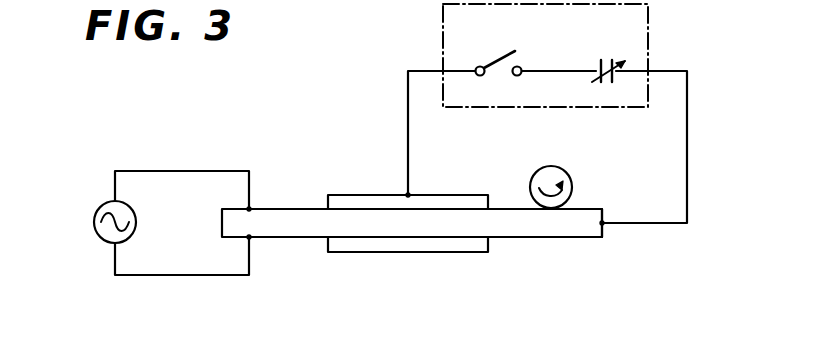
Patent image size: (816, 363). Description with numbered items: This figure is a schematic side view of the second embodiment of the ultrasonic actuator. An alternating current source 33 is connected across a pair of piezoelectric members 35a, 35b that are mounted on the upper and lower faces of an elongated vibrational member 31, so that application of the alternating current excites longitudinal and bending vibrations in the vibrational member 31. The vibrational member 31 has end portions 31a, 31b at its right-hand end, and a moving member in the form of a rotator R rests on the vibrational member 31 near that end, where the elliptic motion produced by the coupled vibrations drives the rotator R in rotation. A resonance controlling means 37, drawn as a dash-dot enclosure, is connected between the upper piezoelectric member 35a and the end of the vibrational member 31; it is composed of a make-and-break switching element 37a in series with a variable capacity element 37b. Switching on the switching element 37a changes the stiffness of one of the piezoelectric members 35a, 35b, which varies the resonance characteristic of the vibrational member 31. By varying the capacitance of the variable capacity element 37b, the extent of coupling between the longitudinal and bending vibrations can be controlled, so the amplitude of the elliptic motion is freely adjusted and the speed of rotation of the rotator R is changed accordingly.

The AC power source 33 is at (100, 206).
The vibrational member 31 is at (518, 223).
The upper surface end of bar 31a is at (585, 207).
The lower surface end of bar 31b is at (582, 237).
The piezoelectric member 35a is at (355, 200).
The piezoelectric member 35b is at (355, 247).
The resonance controlling means 37 is at (648, 30).
The make-and-break switching element 37a is at (495, 62).
The variable capacity element 37b is at (603, 63).
The rotator R is at (537, 173).